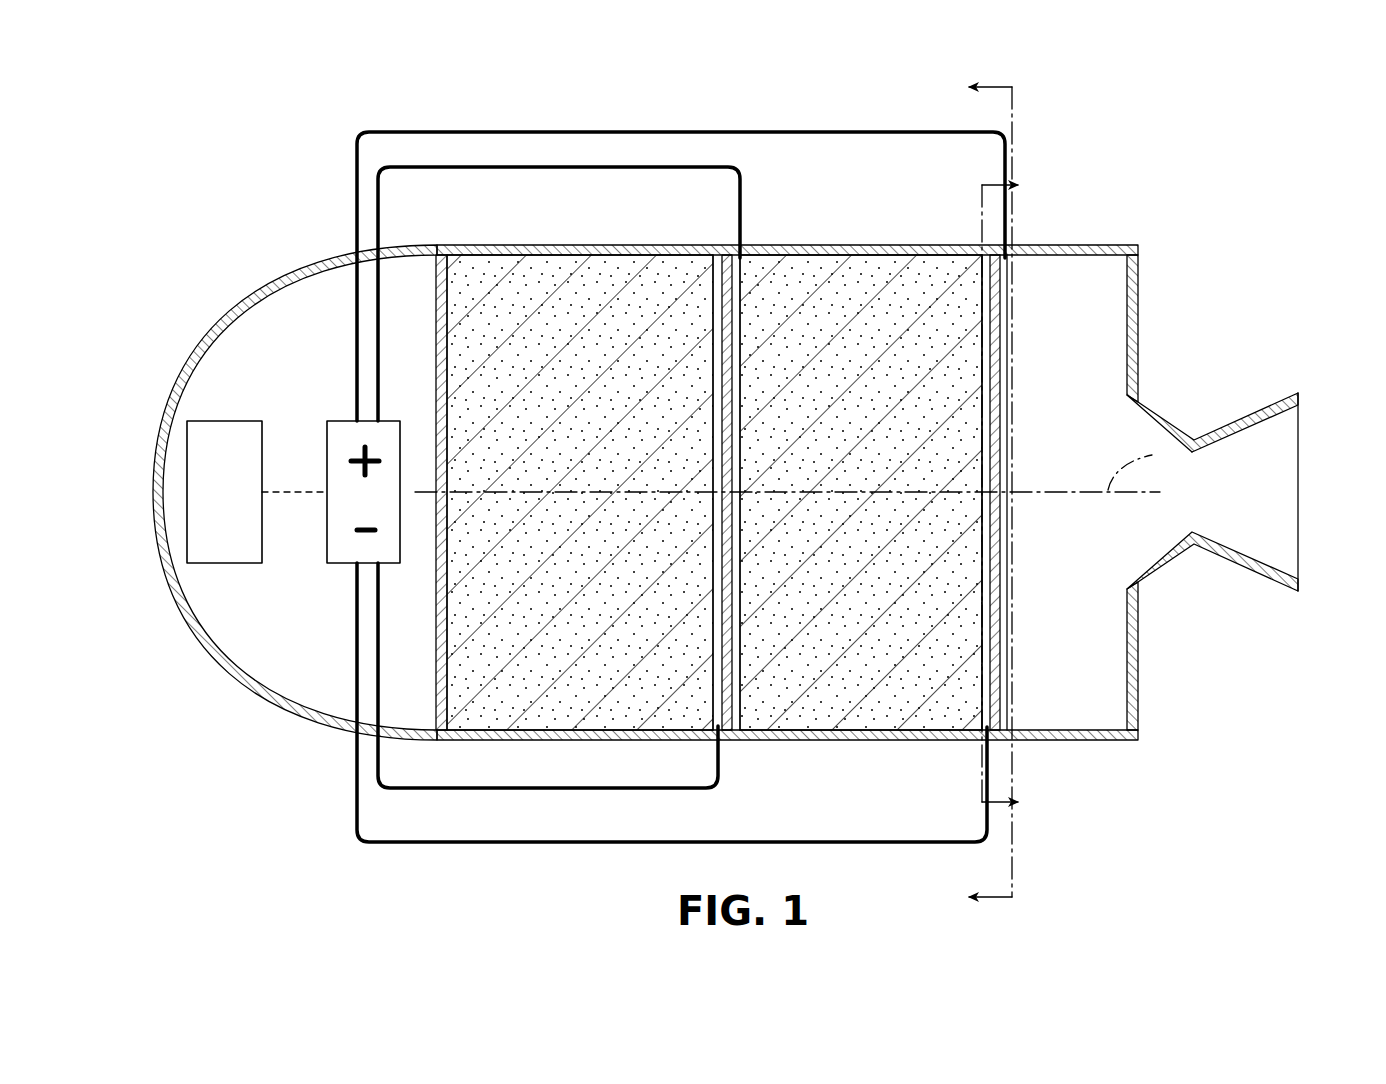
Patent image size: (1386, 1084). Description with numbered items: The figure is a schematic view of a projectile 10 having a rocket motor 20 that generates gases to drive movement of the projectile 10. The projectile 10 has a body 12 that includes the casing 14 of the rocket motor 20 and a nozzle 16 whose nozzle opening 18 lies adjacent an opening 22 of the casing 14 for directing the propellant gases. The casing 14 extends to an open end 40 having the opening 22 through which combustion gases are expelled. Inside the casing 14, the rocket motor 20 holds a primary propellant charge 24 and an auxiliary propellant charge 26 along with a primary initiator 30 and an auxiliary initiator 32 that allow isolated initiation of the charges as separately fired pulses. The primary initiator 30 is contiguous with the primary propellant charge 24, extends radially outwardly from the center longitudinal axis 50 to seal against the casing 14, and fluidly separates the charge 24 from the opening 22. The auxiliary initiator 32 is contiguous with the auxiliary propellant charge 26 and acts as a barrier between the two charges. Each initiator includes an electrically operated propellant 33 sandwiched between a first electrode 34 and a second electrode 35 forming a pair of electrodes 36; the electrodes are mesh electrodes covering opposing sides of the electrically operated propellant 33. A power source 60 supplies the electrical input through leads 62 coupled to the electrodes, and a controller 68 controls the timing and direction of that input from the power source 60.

The projectile 10 is at (758, 492).
The body 12 is at (283, 712).
The casing 14 is at (813, 469).
The nozzle 16 is at (1235, 523).
The nozzle opening 18 is at (1304, 549).
The rocket motor 20 is at (900, 440).
The opening 22 is at (1114, 542).
The primary propellant charge 24 is at (834, 433).
The auxiliary propellant charge 26 is at (531, 433).
The primary initiator 30 is at (1003, 345).
The auxiliary initiator 32 is at (859, 502).
The electrically operated propellant 33 is at (727, 262).
The first electrode 34 is at (752, 502).
The second electrode 35 is at (720, 287).
The pair of electrodes 36 is at (985, 270).
The open end 40 is at (1144, 356).
The center longitudinal axis 50 is at (1144, 468).
The power source 60 is at (325, 550).
The leads 62 is at (800, 131).
The controller 68 is at (204, 503).